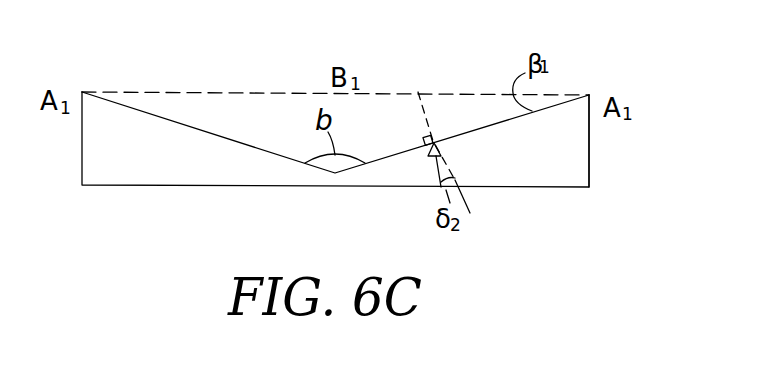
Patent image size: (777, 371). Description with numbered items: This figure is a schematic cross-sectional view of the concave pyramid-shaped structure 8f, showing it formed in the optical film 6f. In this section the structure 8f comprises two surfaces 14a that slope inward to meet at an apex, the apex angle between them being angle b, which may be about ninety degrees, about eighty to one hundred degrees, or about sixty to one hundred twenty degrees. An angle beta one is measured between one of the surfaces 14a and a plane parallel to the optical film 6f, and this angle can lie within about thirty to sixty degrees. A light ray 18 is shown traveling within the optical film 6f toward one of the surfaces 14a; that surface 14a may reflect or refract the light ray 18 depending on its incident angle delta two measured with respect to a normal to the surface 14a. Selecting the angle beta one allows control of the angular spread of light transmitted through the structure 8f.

The concave pyramid-shaped structure 8f is at (158, 57).
The surfaces 14a is at (240, 143).
The optical film 6f is at (577, 155).
The light ray 18 is at (437, 170).